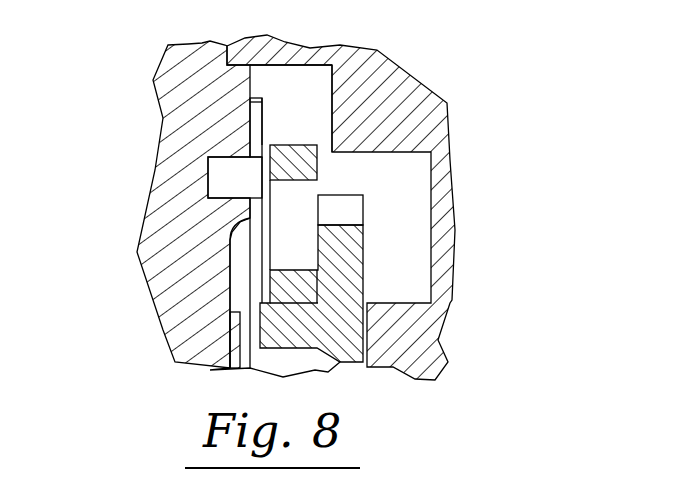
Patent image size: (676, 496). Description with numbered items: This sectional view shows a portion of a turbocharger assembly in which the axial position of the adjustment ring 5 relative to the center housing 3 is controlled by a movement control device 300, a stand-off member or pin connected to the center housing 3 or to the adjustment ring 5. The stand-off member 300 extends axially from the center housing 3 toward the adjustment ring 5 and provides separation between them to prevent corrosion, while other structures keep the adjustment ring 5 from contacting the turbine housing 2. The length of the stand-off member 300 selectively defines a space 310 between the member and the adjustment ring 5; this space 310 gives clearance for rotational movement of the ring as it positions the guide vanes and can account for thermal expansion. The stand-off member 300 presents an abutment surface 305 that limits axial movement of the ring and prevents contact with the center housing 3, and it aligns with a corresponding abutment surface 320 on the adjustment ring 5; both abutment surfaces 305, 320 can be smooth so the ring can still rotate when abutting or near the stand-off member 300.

The turbine housing 2 is at (407, 90).
The center housing 3 is at (167, 48).
The adjustment ring 5 is at (302, 160).
The movement control device 300 is at (252, 127).
The abutment surface 305 is at (262, 175).
The space 310 is at (298, 103).
The abutment surface 320 is at (272, 176).